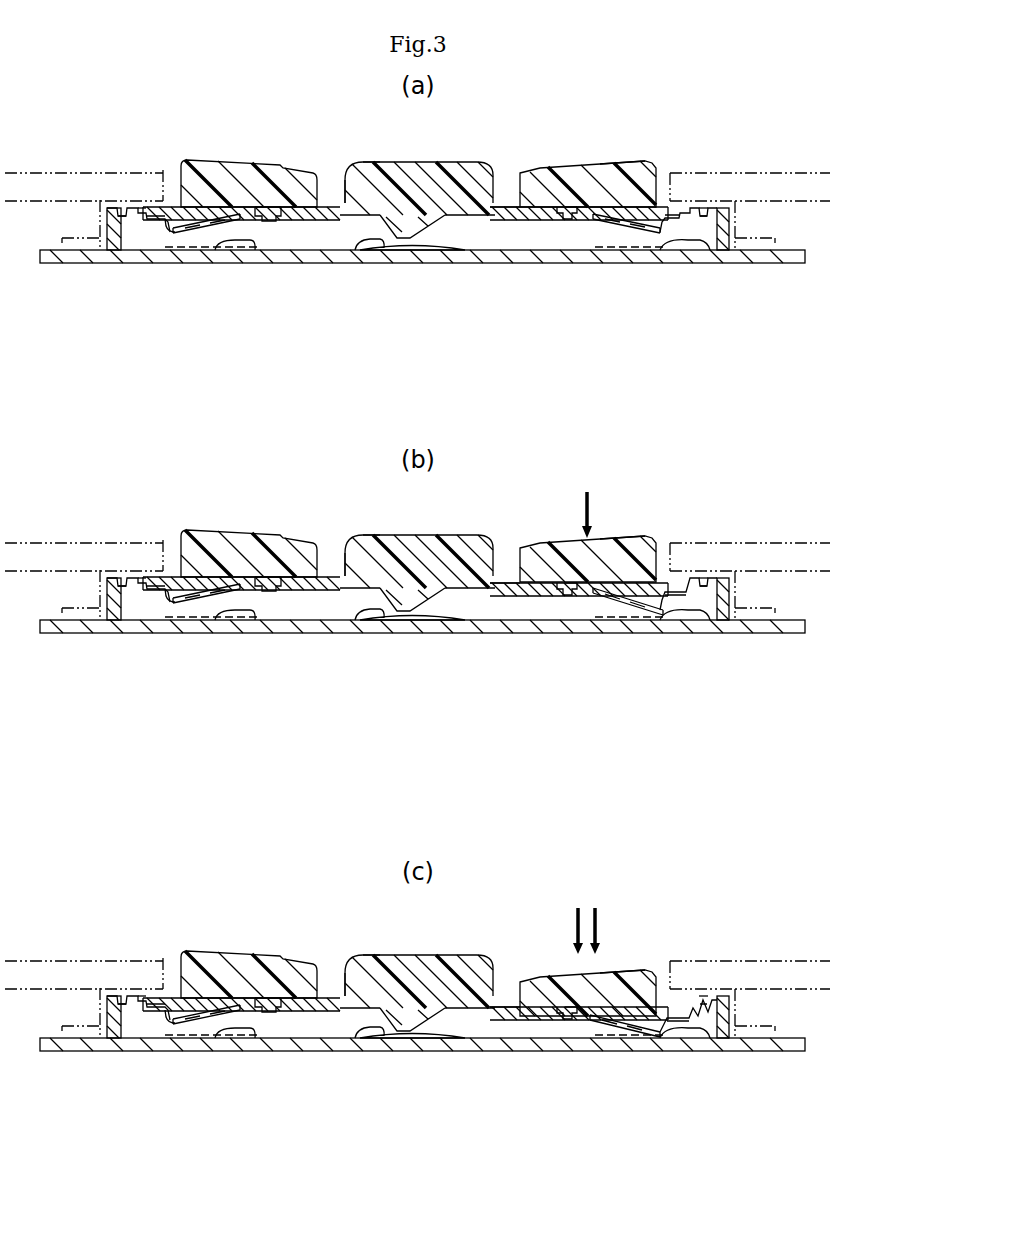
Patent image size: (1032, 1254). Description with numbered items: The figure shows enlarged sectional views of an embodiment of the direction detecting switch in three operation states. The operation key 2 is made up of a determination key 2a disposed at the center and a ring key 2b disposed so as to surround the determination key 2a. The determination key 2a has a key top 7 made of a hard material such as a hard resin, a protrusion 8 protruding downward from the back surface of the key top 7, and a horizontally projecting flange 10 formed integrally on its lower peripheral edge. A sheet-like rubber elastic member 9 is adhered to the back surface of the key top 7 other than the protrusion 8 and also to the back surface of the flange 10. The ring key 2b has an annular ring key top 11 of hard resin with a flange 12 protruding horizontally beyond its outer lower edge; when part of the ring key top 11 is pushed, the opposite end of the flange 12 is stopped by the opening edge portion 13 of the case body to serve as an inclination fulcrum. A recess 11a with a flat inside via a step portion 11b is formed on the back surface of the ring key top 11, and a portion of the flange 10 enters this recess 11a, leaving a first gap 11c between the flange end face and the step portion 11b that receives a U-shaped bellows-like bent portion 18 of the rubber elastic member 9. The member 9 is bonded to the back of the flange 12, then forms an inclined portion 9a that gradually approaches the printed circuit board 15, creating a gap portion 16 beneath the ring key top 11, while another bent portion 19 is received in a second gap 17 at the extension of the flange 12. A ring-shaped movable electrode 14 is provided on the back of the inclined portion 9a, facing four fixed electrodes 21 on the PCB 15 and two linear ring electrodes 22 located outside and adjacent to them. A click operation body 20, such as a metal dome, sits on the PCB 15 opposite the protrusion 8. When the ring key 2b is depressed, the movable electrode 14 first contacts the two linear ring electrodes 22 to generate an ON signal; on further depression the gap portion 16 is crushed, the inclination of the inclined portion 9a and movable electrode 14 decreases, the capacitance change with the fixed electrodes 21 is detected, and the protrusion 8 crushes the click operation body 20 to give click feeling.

The operation key 2 is at (516, 128).
The determination key 2a is at (378, 162).
The ring key 2b is at (600, 168).
The key top 7 is at (465, 162).
The protrusion (pusher) 8 is at (429, 238).
The sheet-like rubber elastic member 9 is at (722, 207).
The inclined portion 9a is at (168, 226).
The flange 10 is at (497, 212).
The ring key top 11 is at (245, 160).
The recess 11a is at (572, 205).
The step portion 11b is at (268, 205).
The first gap 11c is at (579, 207).
The flange 12 is at (688, 207).
The opening edge portion 13 is at (155, 200).
The movable electrode 14 is at (237, 233).
The printed circuit board (PCB) 15 is at (322, 262).
The gap portion 16 is at (190, 212).
The second gap 17 is at (704, 207).
The bent portion 18 is at (298, 207).
The bent portion 19 is at (128, 216).
The click operation body 20 is at (365, 248).
The fixed electrode 21 is at (225, 250).
The linear ring electrode 22 is at (170, 235).